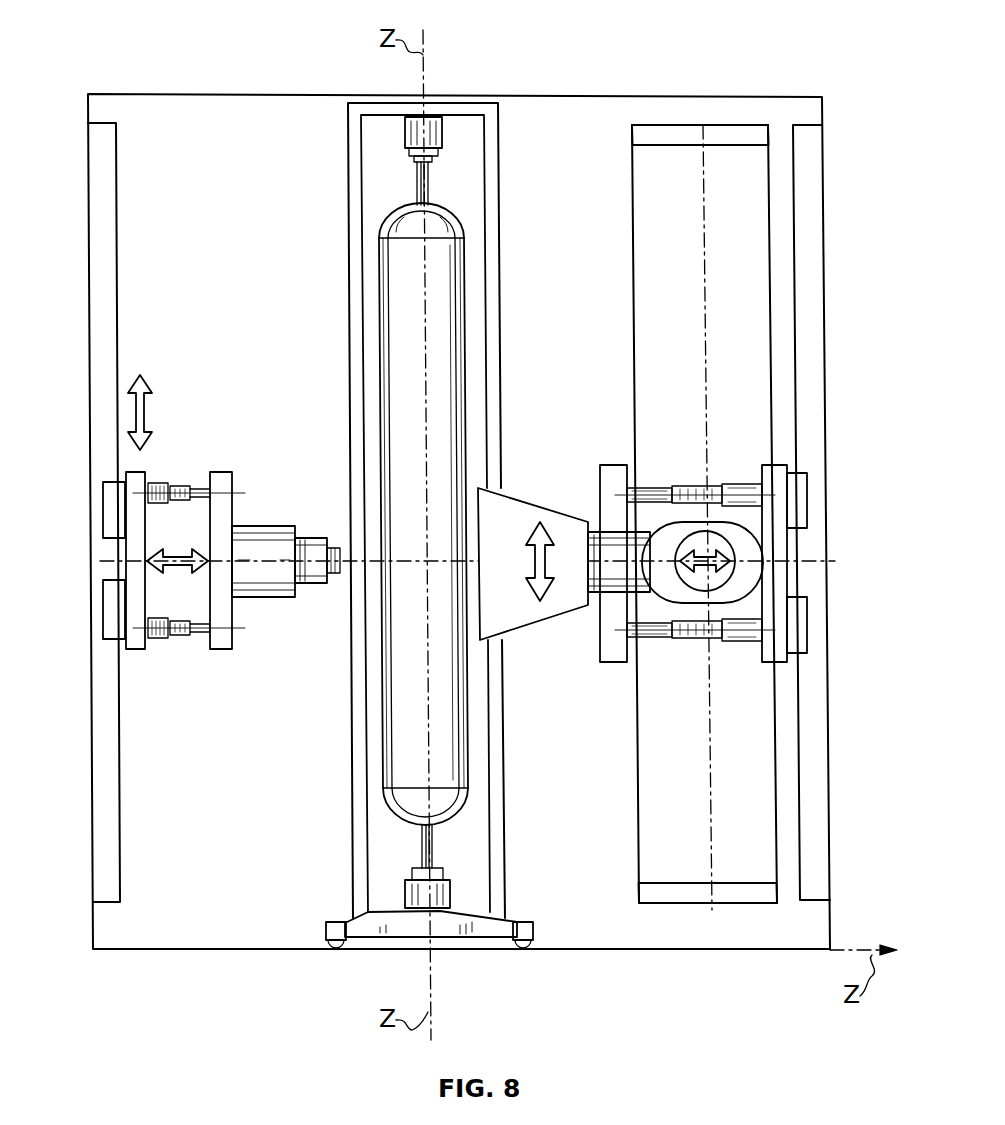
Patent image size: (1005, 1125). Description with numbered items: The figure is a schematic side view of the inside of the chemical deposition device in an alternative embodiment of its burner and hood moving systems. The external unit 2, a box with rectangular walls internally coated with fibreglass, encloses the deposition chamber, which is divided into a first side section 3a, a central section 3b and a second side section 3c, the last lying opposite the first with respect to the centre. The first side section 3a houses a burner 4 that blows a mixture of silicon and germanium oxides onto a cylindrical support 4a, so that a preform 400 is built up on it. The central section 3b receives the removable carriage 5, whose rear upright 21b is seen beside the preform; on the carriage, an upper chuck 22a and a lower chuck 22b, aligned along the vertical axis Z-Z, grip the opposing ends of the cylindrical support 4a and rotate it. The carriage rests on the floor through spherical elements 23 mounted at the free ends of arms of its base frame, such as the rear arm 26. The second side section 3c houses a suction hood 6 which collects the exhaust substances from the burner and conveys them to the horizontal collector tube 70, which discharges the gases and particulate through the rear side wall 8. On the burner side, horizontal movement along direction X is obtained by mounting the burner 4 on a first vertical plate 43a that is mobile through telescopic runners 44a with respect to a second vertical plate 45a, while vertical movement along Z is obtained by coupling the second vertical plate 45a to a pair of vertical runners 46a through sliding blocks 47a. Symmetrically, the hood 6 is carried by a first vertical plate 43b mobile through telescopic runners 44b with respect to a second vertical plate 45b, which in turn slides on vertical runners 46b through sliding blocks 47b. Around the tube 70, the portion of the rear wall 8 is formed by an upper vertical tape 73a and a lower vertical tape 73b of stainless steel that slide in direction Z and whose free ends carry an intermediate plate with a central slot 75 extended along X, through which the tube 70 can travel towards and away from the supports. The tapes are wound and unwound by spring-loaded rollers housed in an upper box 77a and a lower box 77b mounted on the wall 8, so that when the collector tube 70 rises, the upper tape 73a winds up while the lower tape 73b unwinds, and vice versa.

The external unit 2 is at (303, 82).
The first side section 3a is at (222, 125).
The central section 3b is at (455, 76).
The second side section 3c is at (607, 118).
The burner 4 is at (265, 542).
The cylindrical support 4a is at (428, 180).
The carriage 5 is at (515, 778).
The suction element 6 is at (510, 519).
The rear side wall 8 is at (574, 306).
The rear upright 21b is at (497, 733).
The upper chuck 22a is at (442, 130).
The lower chuck 22b is at (407, 892).
The spherical element 23 is at (330, 930).
The rear arm 26 is at (450, 925).
The preform 400 is at (406, 350).
The first vertical plate 43a is at (222, 650).
The first vertical plate 43b is at (612, 655).
The telescopic runners 44a is at (190, 665).
The telescopic runners 44b is at (685, 664).
The second vertical plate 45a is at (137, 650).
The second vertical plate 45b is at (775, 655).
The vertical runners 46a is at (107, 294).
The vertical runners 46b is at (812, 378).
The sliding blocks 47a is at (108, 500).
The sliding blocks 47b is at (800, 500).
The collector tube 70 is at (715, 540).
The upper vertical tape 73a is at (695, 324).
The lower vertical tape 73b is at (697, 792).
The central slot 75 is at (683, 525).
The upper box 77a is at (682, 130).
The lower box 77b is at (648, 888).